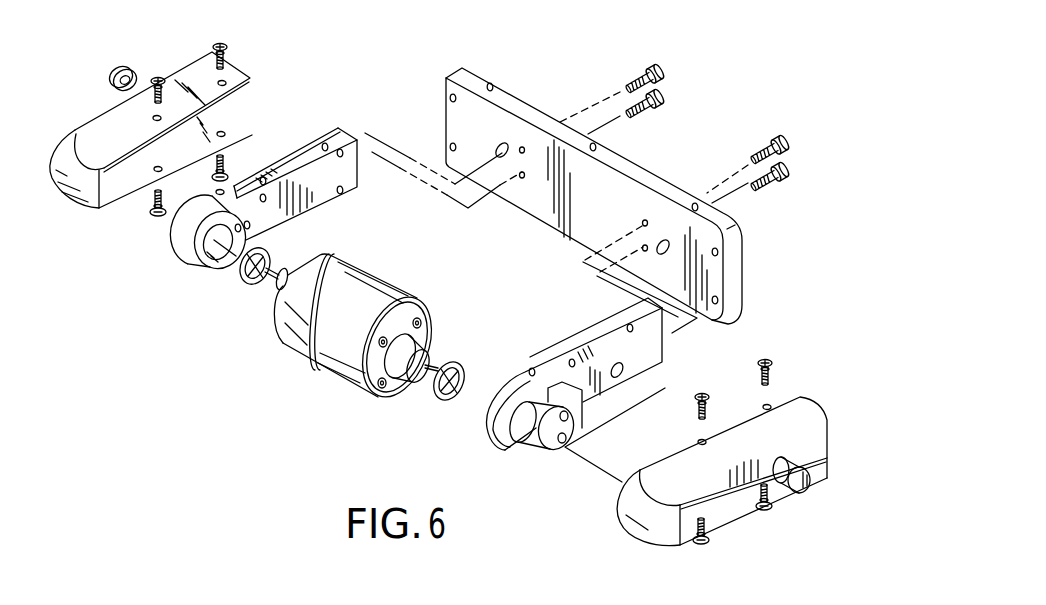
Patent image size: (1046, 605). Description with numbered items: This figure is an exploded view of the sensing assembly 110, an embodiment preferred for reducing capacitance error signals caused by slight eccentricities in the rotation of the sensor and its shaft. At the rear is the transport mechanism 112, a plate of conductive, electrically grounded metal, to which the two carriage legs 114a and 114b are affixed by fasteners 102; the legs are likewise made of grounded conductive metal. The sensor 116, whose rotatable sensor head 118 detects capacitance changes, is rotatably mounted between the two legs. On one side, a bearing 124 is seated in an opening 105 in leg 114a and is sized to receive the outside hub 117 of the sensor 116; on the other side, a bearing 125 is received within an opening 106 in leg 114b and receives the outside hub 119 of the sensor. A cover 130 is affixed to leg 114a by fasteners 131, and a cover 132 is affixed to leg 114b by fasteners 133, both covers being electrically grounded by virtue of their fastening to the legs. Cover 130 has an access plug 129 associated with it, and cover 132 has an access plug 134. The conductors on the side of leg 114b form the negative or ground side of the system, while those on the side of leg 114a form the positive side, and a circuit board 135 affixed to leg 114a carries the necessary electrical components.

The fasteners 102 is at (670, 93).
The opening 105 is at (233, 252).
The opening 106 is at (520, 442).
The sensing assembly 110 is at (343, 72).
The transport mechanism 112 is at (523, 94).
The carriage leg 114a is at (333, 203).
The carriage leg 114b is at (620, 388).
The sensor 116 is at (418, 290).
The outside hub 117 is at (284, 277).
The sensor head 118 is at (384, 270).
The outside hub 119 is at (390, 366).
The bearing 124 is at (242, 285).
The bearing 125 is at (457, 363).
The access plug 129 is at (117, 78).
The cover 130 is at (90, 124).
The fasteners 131 is at (222, 42).
The cover 132 is at (663, 453).
The fasteners 133 is at (707, 393).
The access plug 134 is at (812, 480).
The circuit board 135 is at (290, 148).